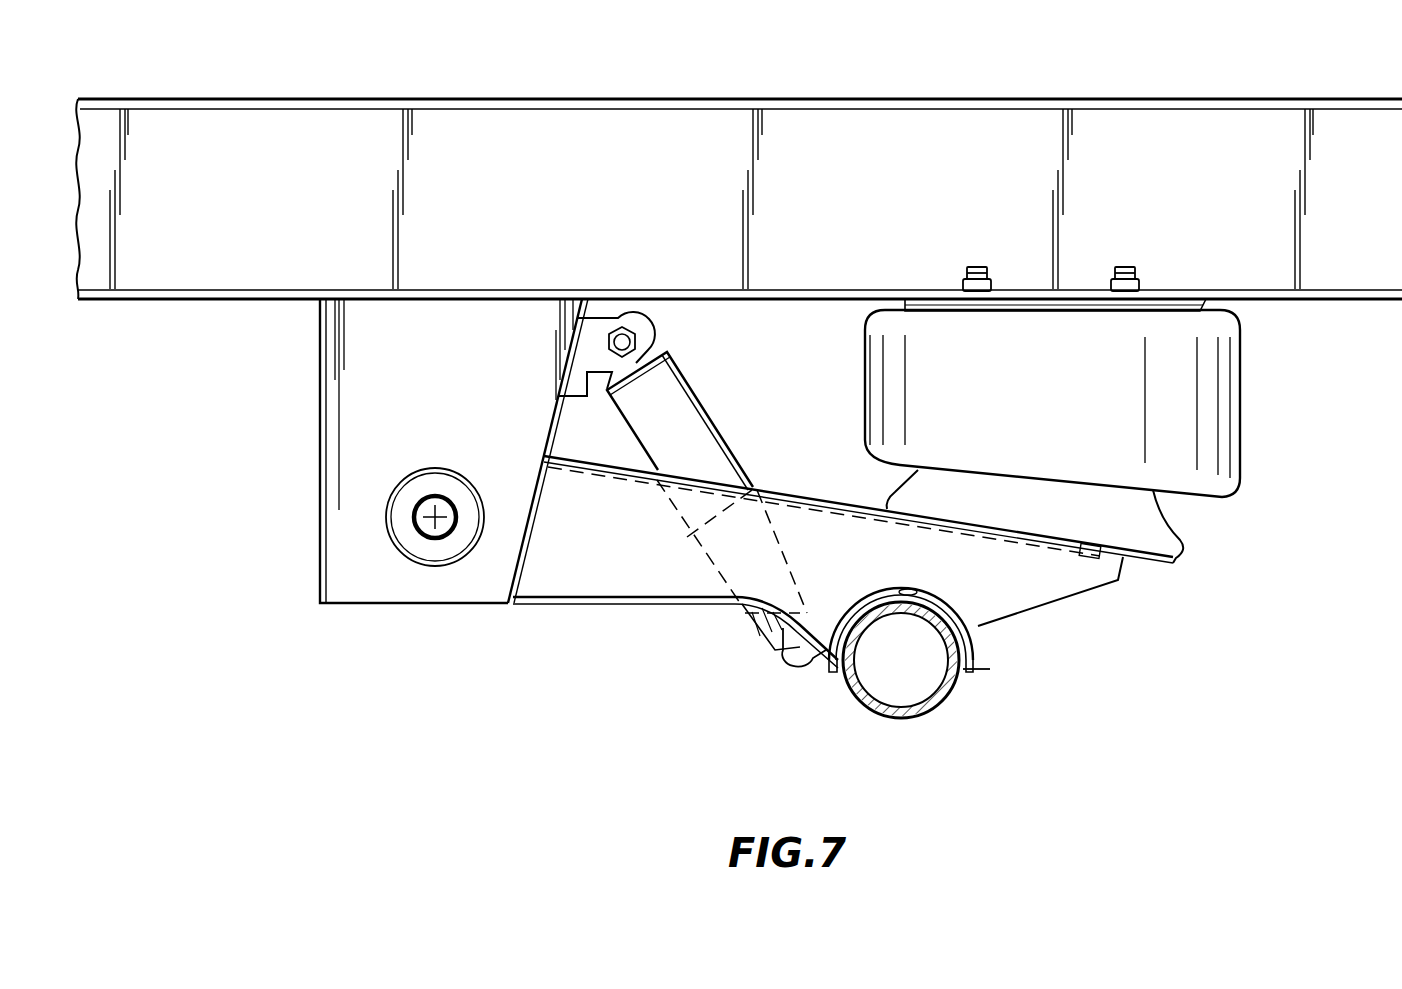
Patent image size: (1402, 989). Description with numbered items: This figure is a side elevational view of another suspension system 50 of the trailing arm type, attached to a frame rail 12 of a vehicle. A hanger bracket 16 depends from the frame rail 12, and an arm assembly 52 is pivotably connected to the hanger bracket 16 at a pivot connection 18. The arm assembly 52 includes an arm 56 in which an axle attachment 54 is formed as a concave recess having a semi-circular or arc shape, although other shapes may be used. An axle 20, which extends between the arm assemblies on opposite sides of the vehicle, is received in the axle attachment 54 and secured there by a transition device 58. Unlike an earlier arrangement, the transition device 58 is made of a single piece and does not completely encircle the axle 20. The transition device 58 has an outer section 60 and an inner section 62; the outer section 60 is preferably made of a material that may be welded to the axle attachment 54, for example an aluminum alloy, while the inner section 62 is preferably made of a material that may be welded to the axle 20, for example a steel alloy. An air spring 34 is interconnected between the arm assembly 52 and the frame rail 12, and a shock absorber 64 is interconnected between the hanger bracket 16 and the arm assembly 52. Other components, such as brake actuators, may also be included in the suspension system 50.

The frame rail 12 is at (808, 100).
The hanger bracket 16 is at (318, 348).
The pivot connection 18 is at (437, 566).
The axle 20 is at (950, 700).
The air spring 34 is at (1245, 437).
The suspension system 50 is at (358, 755).
The arm assembly 52 is at (617, 607).
The axle attachment 54 is at (900, 590).
The arm 56 is at (830, 497).
The transition device 58 is at (980, 627).
The outer section 60 is at (978, 668).
The inner section 62 is at (953, 643).
The shock absorber 64 is at (697, 390).